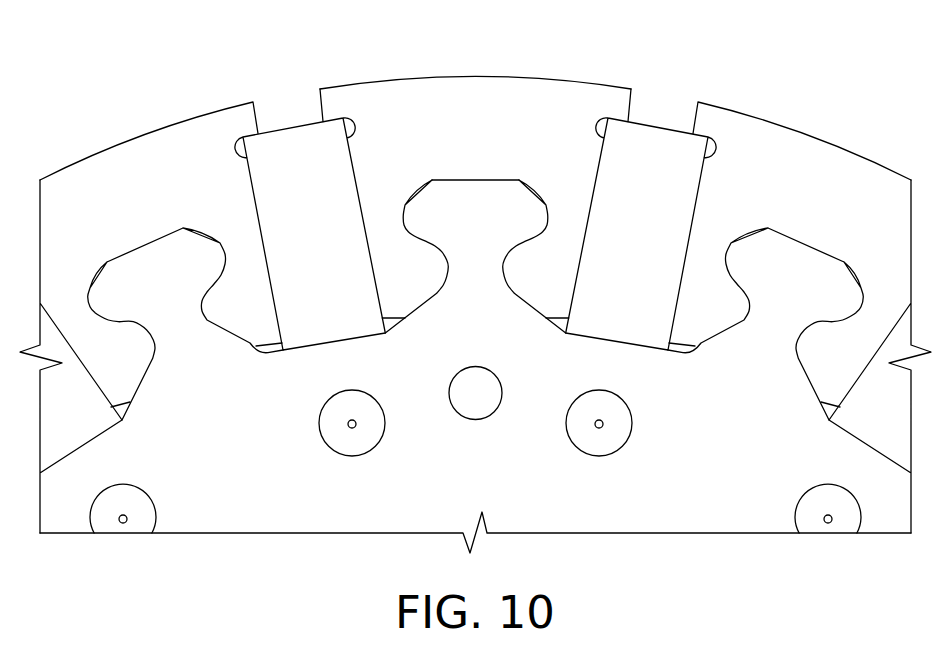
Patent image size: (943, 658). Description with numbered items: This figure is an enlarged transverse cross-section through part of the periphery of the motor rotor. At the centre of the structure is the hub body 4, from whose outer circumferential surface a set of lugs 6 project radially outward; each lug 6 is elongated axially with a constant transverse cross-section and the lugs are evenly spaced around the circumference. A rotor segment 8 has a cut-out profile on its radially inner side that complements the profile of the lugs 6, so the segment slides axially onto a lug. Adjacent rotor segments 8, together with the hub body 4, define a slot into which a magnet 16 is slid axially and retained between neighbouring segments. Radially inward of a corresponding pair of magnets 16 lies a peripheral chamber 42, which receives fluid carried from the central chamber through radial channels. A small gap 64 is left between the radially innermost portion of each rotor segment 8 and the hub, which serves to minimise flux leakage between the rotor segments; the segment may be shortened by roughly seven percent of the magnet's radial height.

The hub body 4 is at (752, 518).
The lug 6 is at (798, 253).
The rotor segment 8 is at (500, 88).
The magnet 16 is at (652, 140).
The peripheral chamber 42 is at (352, 452).
The gap 64 is at (405, 318).